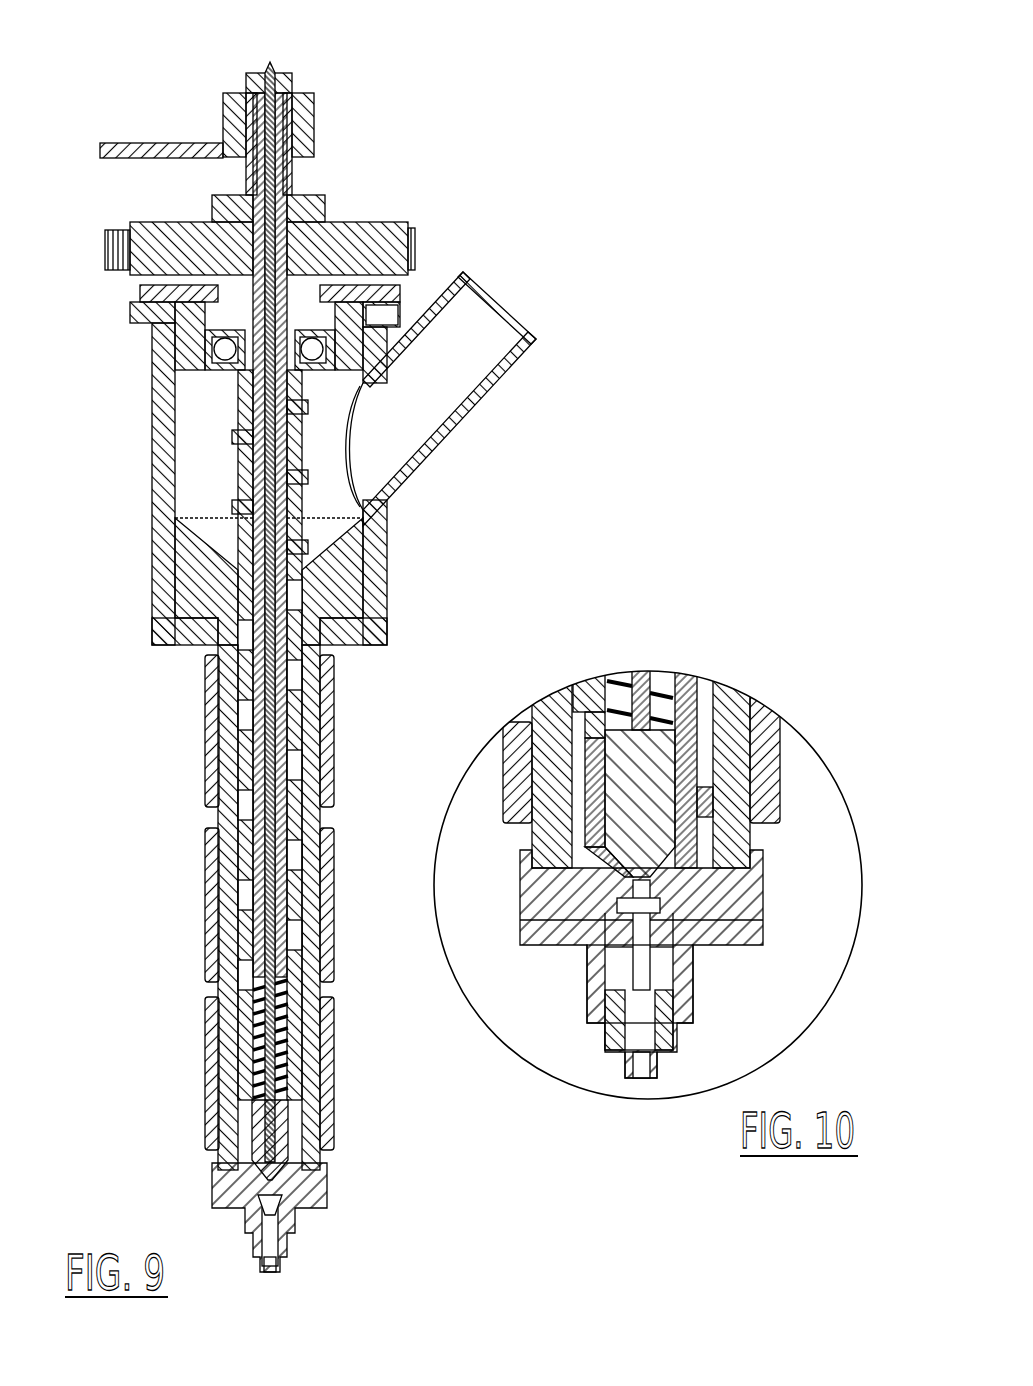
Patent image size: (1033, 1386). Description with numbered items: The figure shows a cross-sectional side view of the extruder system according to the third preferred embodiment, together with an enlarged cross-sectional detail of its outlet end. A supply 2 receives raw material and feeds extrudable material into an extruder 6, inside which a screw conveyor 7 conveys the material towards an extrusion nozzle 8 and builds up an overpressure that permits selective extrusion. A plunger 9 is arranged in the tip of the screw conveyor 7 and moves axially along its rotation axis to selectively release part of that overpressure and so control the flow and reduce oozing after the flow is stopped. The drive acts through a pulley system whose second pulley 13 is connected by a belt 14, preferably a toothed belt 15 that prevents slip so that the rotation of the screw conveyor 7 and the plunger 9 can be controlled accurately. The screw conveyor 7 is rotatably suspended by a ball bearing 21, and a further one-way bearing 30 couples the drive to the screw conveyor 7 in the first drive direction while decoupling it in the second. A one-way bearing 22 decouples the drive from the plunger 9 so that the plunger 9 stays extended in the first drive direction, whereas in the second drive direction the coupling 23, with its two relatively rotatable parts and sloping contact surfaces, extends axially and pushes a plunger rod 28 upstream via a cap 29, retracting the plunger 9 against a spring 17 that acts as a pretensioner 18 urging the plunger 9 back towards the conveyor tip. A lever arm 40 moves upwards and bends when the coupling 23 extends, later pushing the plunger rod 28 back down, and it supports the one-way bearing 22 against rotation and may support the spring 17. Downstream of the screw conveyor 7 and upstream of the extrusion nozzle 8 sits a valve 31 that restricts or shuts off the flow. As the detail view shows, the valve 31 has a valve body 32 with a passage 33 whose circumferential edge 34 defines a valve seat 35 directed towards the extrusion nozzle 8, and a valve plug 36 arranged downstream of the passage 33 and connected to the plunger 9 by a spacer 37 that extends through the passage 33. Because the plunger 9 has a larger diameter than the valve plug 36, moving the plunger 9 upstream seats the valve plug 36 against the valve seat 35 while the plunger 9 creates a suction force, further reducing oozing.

In FIG. 9, the supply 2 is at (468, 362).
In FIG. 9, the extruder 6 is at (224, 818).
In FIG. 10, the extruder 6 is at (550, 713).
In FIG. 9, the screw conveyor 7 is at (256, 522).
In FIG. 9, the extrusion nozzle 8 is at (268, 1258).
In FIG. 10, the extrusion nozzle 8 is at (642, 1075).
In FIG. 9, the plunger 9 is at (270, 1140).
In FIG. 10, the plunger 9 is at (652, 775).
In FIG. 9, the second pulley 13 is at (370, 240).
In FIG. 9, the belt 14 is at (305, 302).
In FIG. 9, the toothed belt 15 is at (416, 250).
In FIG. 9, the spring 17 is at (192, 595).
In FIG. 10, the spring 17 is at (701, 654).
In FIG. 9, the pretensioner 18 is at (265, 1068).
In FIG. 10, the pretensioner 18 is at (668, 692).
In FIG. 9, the ball bearing 21 is at (218, 376).
In FIG. 9, the one-way bearing 22 is at (294, 125).
In FIG. 9, the coupling 23 is at (316, 170).
In FIG. 9, the plunger rod 28 is at (268, 62).
In FIG. 10, the plunger rod 28 is at (638, 678).
In FIG. 9, the cap 29 is at (292, 82).
In FIG. 9, the further one-way bearing 30 is at (243, 303).
In FIG. 9, the valve 31 is at (354, 1200).
In FIG. 10, the valve 31 is at (548, 1038).
In FIG. 10, the valve body 32 is at (728, 895).
In FIG. 10, the passage 33 is at (665, 930).
In FIG. 10, the circumferential edge 34 is at (580, 966).
In FIG. 10, the valve seat 35 is at (613, 918).
In FIG. 10, the valve plug 36 is at (645, 967).
In FIG. 10, the spacer 37 is at (642, 892).
In FIG. 9, the lever arm 40 is at (150, 150).